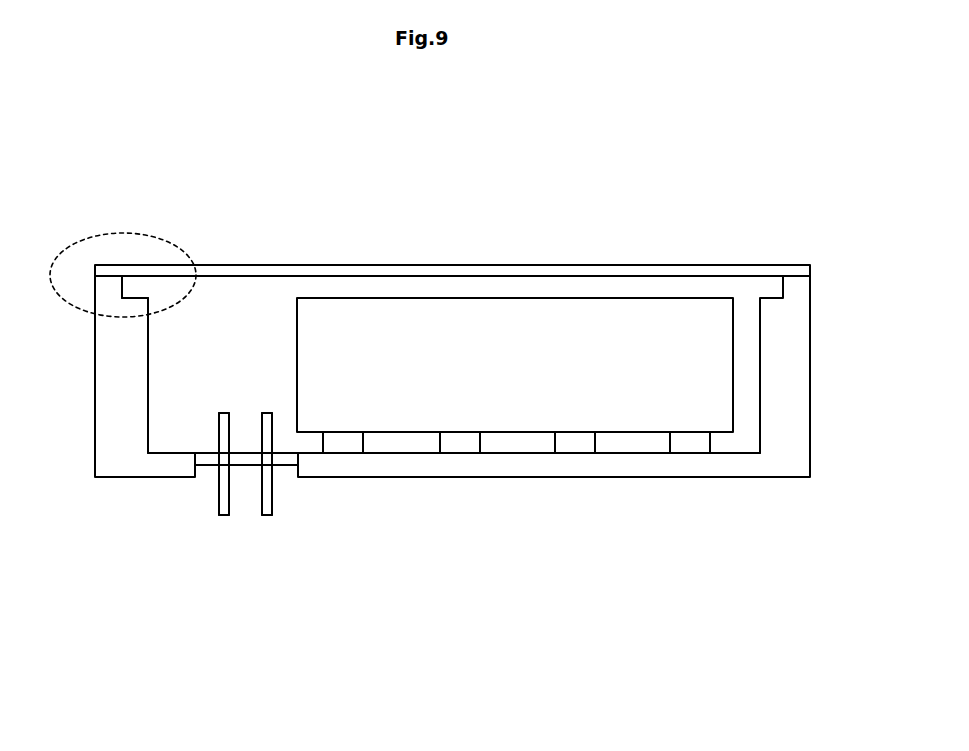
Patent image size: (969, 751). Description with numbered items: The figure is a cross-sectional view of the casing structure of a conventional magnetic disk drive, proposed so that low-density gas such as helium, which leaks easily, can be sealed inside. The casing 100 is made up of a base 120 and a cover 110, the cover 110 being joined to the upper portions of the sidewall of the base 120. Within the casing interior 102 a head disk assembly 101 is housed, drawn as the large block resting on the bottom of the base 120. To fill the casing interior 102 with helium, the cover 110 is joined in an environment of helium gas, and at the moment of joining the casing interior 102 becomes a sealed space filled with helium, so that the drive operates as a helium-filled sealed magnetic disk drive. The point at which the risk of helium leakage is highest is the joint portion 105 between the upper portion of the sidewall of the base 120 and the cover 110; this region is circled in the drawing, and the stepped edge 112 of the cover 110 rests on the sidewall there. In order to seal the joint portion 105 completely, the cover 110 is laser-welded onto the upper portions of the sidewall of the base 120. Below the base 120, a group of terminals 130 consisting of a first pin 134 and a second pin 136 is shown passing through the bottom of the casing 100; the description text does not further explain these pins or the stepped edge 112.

The casing 100 is at (505, 219).
The head disk assembly (HDA) 101 is at (297, 362).
The casing interior 102 is at (658, 294).
The joint portion 105 is at (113, 234).
The cover 110 is at (396, 264).
The step portion 112 is at (111, 265).
The base 120 is at (522, 478).
The lead terminals 130 is at (268, 594).
The first lead 134 is at (224, 517).
The second lead 136 is at (267, 517).